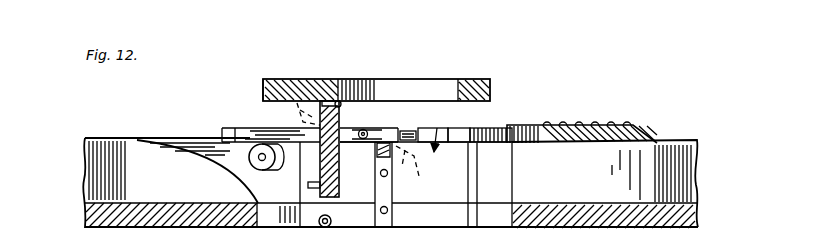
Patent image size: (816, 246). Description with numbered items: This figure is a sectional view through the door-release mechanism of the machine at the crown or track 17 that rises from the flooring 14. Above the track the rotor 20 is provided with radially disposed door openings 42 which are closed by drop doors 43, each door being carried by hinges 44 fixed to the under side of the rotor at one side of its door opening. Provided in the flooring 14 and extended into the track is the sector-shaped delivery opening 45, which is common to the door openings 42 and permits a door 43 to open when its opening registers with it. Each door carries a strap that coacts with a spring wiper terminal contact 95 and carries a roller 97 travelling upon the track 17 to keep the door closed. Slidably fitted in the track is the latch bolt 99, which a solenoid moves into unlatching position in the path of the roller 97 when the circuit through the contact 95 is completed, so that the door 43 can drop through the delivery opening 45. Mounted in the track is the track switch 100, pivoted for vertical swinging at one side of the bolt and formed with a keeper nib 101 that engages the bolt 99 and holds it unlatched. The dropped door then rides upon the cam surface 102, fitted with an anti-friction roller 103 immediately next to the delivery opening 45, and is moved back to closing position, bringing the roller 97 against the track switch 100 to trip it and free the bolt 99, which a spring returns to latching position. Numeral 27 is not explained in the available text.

The flooring 14 is at (97, 210).
The track 17 is at (227, 126).
The rotor 20 is at (473, 79).
The screw 27 is at (330, 226).
The door openings 42 is at (380, 79).
The drop door 43 is at (338, 162).
The hinges 44 is at (330, 79).
The delivery opening 45 is at (467, 127).
The spring wiper terminal contact 95 is at (590, 125).
The roller 97 is at (281, 79).
The latch bolt 99 is at (428, 128).
The track switch 100 is at (372, 100).
The keeper nib 101 is at (407, 130).
The cam surface 102 is at (175, 137).
The anti-friction roller 103 is at (252, 152).